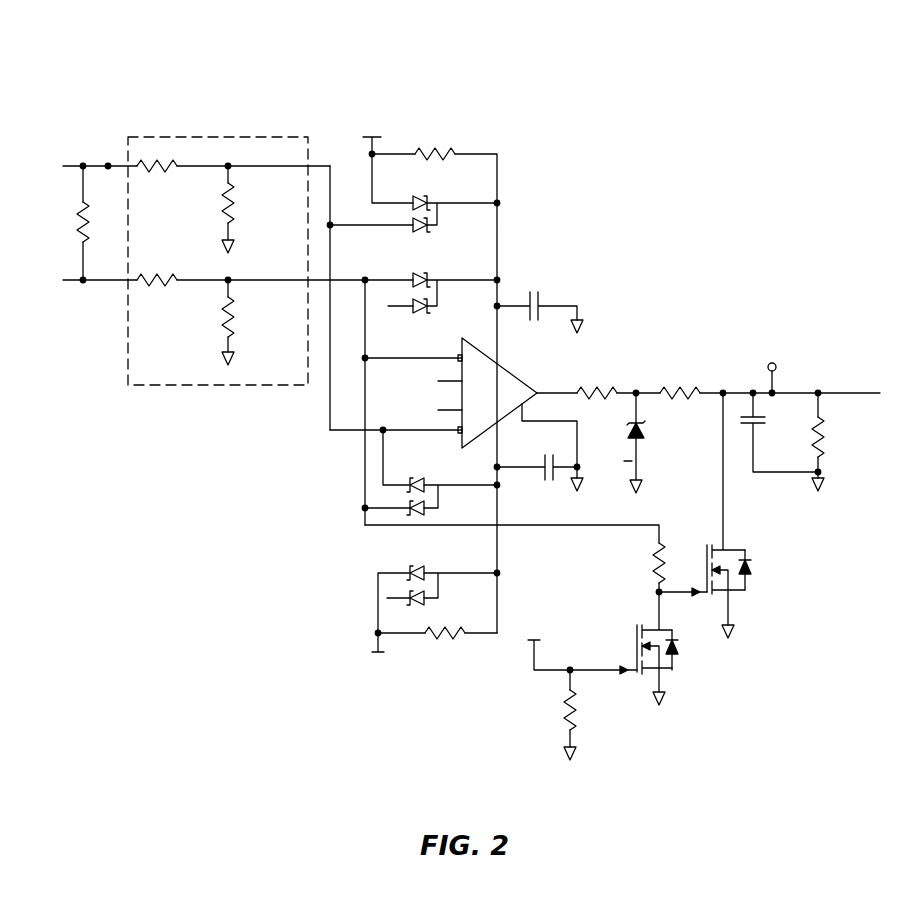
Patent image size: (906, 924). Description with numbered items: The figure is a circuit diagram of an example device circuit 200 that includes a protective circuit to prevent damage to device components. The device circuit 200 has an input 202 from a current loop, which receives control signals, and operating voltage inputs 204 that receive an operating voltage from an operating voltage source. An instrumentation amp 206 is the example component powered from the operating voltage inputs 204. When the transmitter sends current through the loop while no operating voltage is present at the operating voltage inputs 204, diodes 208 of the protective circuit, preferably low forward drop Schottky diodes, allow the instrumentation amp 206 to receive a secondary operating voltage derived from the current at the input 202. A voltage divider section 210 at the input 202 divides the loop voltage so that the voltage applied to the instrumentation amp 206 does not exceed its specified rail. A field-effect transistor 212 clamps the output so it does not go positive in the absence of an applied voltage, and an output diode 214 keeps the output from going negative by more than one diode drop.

The device circuit 200 is at (327, 63).
The input 202 is at (63, 166).
The operating voltage inputs 204 is at (373, 112).
The instrumentation amp 206 is at (460, 385).
The diodes 208 is at (400, 497).
The voltage divider section 210 is at (228, 137).
The field-effect transistor 212 is at (745, 590).
The output diode 214 is at (638, 421).